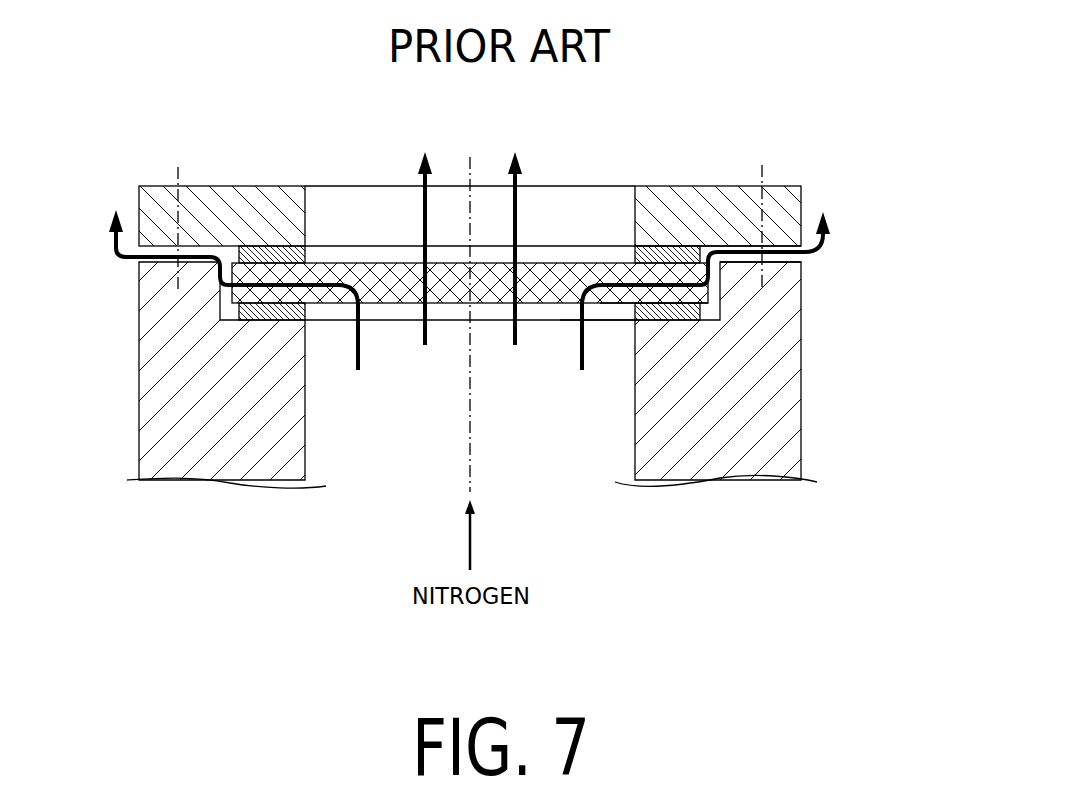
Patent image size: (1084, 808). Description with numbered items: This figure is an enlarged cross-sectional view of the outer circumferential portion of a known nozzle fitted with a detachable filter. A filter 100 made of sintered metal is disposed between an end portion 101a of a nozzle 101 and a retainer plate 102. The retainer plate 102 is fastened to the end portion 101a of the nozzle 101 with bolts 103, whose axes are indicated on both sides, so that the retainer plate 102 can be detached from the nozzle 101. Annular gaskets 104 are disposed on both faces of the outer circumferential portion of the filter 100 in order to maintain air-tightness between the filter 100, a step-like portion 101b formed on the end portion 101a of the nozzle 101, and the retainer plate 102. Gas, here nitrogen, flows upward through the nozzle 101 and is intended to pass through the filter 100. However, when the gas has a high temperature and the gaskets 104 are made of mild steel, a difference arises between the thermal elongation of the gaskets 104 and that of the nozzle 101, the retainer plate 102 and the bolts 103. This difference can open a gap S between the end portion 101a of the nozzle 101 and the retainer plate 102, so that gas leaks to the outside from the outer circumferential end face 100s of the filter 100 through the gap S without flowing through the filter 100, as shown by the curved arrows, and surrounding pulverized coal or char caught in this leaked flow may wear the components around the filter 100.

The filter 100 is at (562, 263).
The outer circumferential end face of the filter 100s is at (708, 290).
The nozzle 101 is at (801, 405).
The end portion of the nozzle 101a is at (801, 282).
The step-like portion 101b is at (633, 313).
The retainer plate 102 is at (672, 186).
The bolts 103 is at (172, 176).
The annular gaskets 104 is at (268, 246).
The gap S is at (731, 246).